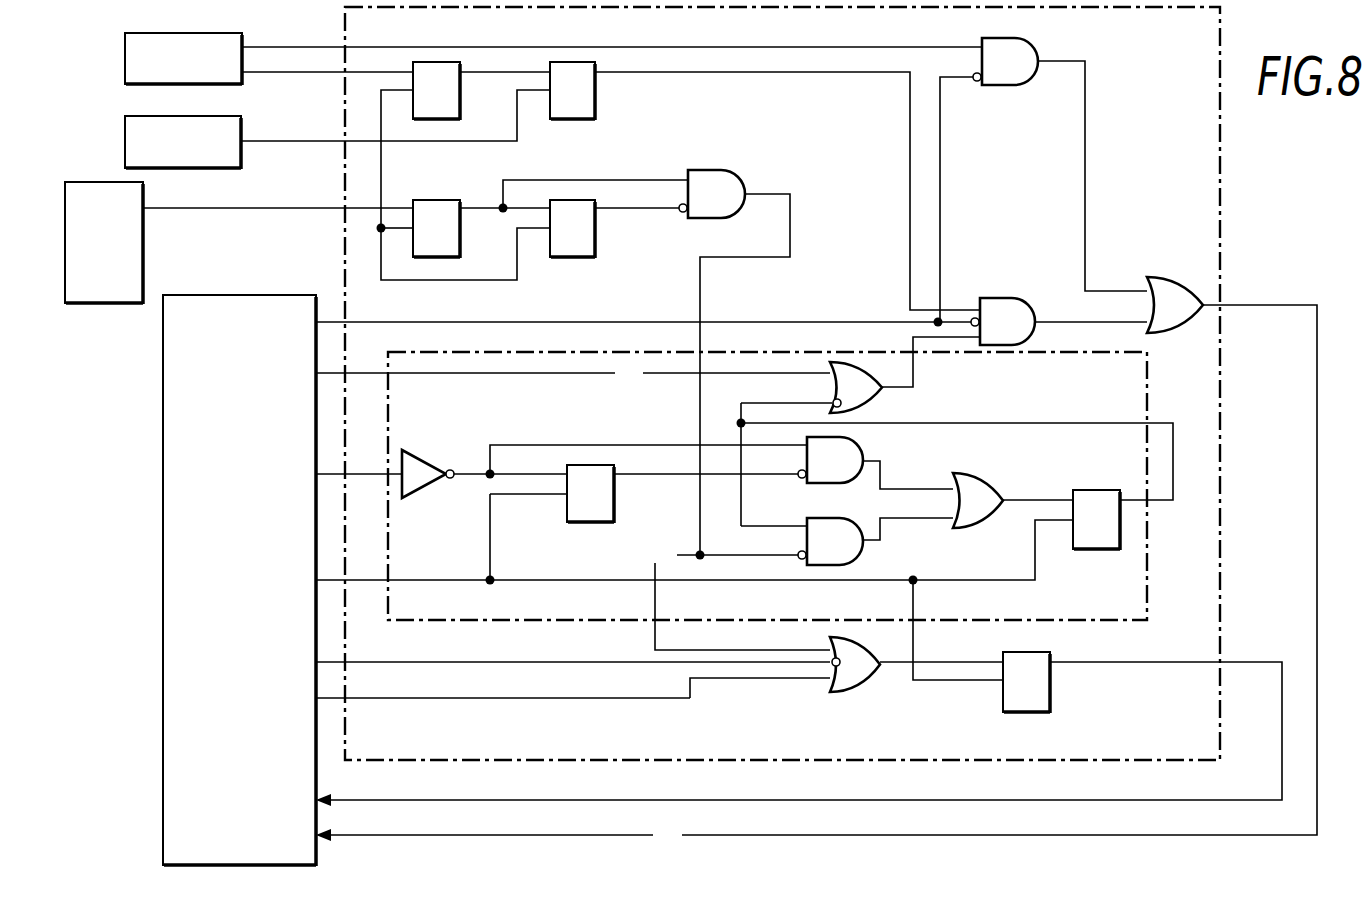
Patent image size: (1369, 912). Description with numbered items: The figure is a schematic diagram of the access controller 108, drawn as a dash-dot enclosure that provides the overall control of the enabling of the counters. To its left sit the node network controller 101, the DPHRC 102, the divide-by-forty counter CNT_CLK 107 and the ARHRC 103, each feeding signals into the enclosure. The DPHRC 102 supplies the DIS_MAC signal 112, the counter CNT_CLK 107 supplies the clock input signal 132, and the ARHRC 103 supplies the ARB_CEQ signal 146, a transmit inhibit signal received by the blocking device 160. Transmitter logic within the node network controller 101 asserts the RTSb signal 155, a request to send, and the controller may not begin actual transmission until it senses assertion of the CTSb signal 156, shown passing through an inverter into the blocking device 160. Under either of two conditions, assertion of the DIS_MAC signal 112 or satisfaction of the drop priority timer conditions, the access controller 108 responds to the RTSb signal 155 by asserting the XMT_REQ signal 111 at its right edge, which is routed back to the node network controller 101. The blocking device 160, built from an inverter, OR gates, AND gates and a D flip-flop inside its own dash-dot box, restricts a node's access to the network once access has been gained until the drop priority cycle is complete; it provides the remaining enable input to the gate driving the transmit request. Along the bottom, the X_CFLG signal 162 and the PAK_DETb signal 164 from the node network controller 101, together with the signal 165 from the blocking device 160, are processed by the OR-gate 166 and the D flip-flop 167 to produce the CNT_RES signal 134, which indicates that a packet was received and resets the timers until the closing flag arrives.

The node network controller 101 is at (163, 580).
The DPHRC 102 is at (125, 57).
The ARHRC 103 is at (118, 303).
The divide-by-forty counter CNT_CLK 107 is at (125, 141).
The access controller 108 is at (1221, 208).
The XMT_REQ signal 111 is at (1172, 835).
The DIS_MAC signal 112 is at (505, 47).
The clock input signal 132 is at (272, 141).
The CNT_RES signal 134 is at (1247, 662).
The ARB_CEQ signal 146 is at (272, 208).
The RTSb signal 155 is at (790, 320).
The CTSb signal 156 is at (365, 474).
The blocking device 160 is at (1147, 545).
The X_CFLG signal 162 is at (515, 698).
The PAK_DETb signal 164 is at (455, 662).
The signal from blocking device 165 is at (653, 633).
The OR-gate 166 is at (871, 677).
The D flip-flop 167 is at (1052, 690).